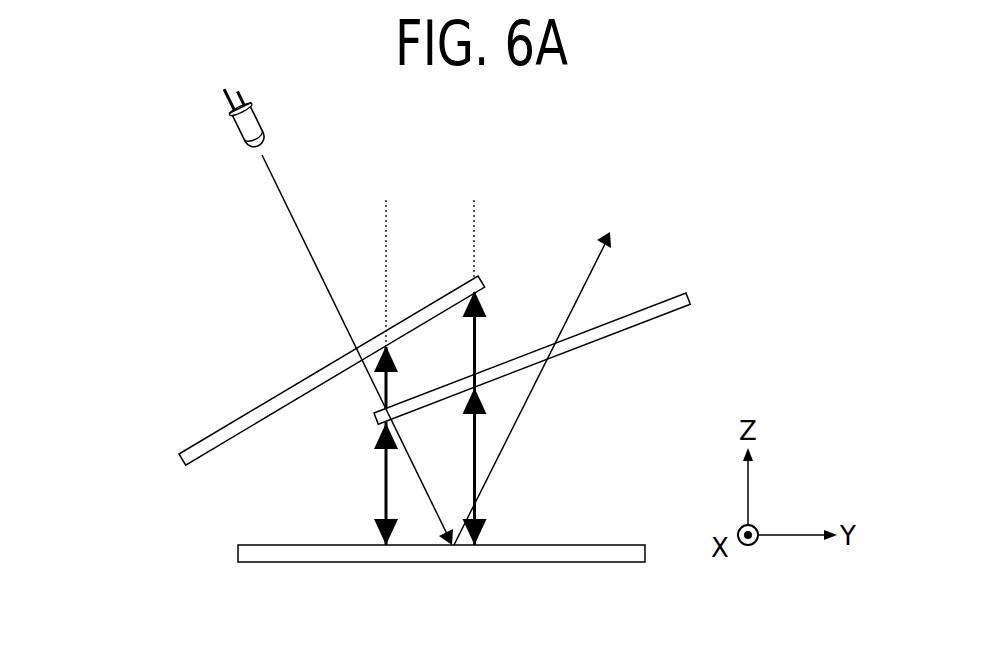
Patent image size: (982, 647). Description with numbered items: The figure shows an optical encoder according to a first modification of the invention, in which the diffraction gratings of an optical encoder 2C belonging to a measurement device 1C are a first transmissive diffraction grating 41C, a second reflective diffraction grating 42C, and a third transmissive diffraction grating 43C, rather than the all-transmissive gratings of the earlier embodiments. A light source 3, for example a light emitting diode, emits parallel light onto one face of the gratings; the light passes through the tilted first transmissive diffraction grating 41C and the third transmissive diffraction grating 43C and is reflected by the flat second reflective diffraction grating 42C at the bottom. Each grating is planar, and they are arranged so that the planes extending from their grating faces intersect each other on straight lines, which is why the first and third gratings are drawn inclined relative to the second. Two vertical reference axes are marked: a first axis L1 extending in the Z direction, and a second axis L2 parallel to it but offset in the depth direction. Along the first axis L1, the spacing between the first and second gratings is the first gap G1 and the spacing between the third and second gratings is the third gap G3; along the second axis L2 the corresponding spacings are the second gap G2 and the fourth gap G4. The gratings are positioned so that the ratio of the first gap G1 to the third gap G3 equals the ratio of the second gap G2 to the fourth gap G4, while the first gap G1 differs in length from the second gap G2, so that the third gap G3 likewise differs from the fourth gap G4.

The light source 3 is at (259, 124).
The measurement device 1C is at (182, 280).
The optical encoder 2C is at (163, 357).
The first transmissive diffraction grating 41C is at (178, 451).
The second reflective diffraction grating 42C is at (257, 563).
The third transmissive diffraction grating 43C is at (683, 307).
The first axis L1 is at (476, 223).
The second axis L2 is at (387, 260).
The first gap G1 is at (490, 339).
The second gap G2 is at (401, 377).
The third gap G3 is at (463, 466).
The fourth gap G4 is at (374, 483).